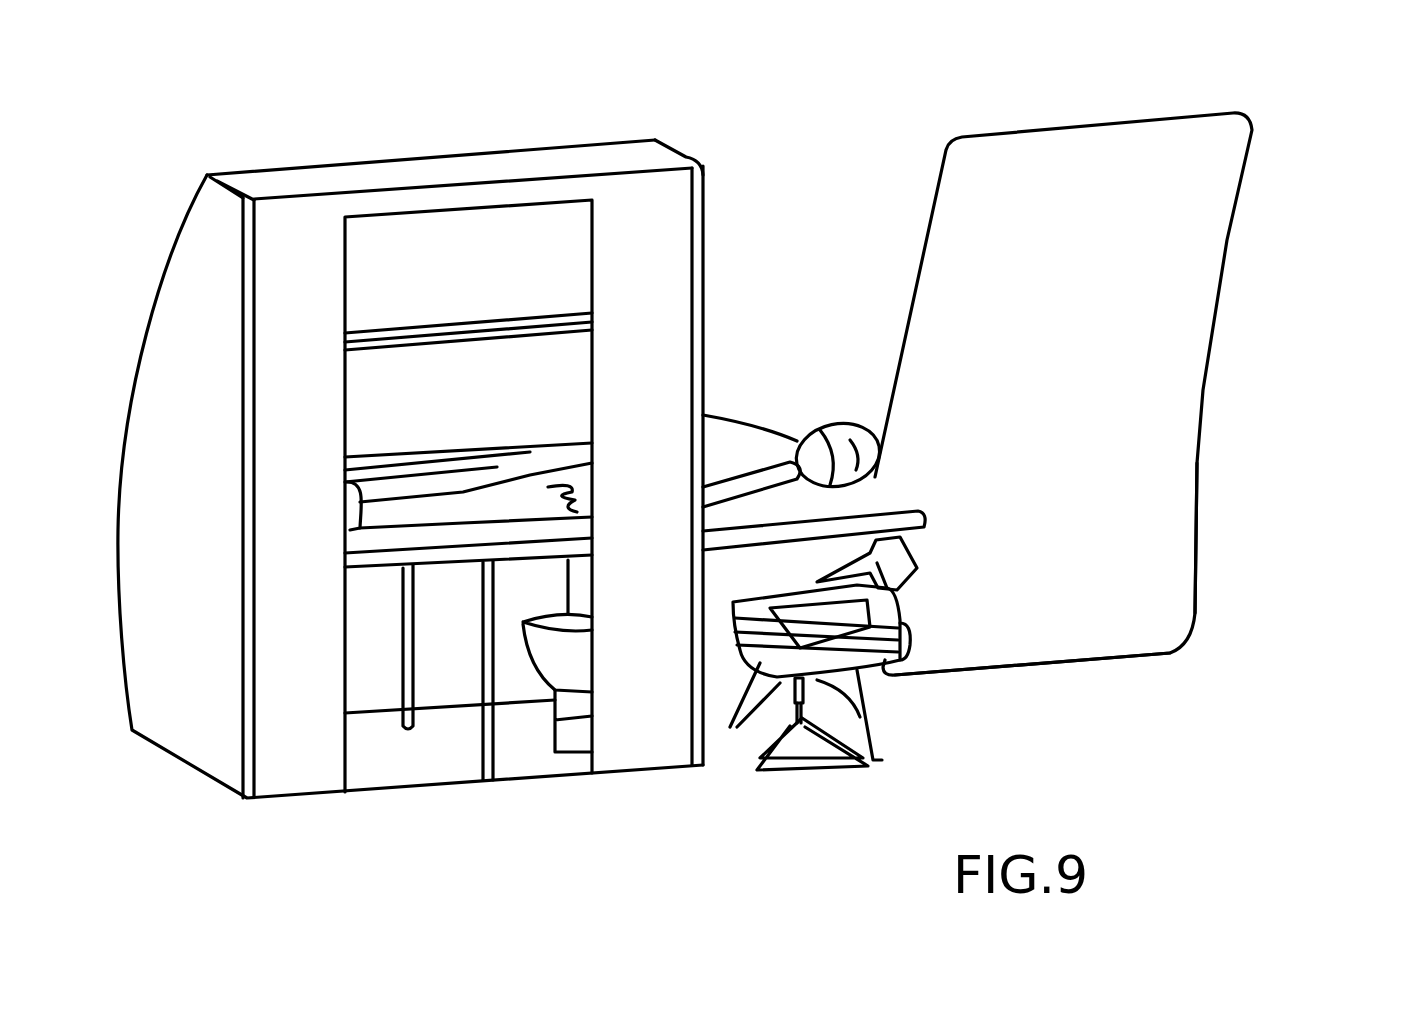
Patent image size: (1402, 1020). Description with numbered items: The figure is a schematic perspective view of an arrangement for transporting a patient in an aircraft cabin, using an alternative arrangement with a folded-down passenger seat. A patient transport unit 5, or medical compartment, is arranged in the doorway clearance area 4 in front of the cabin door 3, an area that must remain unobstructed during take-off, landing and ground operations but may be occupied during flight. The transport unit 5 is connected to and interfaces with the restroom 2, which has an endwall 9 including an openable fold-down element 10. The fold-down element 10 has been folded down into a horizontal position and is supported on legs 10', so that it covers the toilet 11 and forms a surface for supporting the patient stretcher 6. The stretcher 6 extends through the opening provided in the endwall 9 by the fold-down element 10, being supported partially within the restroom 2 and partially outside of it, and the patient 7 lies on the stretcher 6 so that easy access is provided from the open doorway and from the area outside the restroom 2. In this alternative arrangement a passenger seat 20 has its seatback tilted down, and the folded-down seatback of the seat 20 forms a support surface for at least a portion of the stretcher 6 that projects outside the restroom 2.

The restroom 2 is at (484, 120).
The cabin door 3 is at (1097, 353).
The doorway clearance area 4 is at (1068, 777).
The patient transport unit 5 is at (1268, 375).
The patient stretcher 6 is at (923, 533).
The patient 7 is at (747, 438).
The endwall 9 is at (679, 157).
The fold-down element 10 is at (480, 705).
The legs 10' is at (373, 707).
The toilet 11 is at (565, 667).
The passenger seat 20 is at (733, 727).